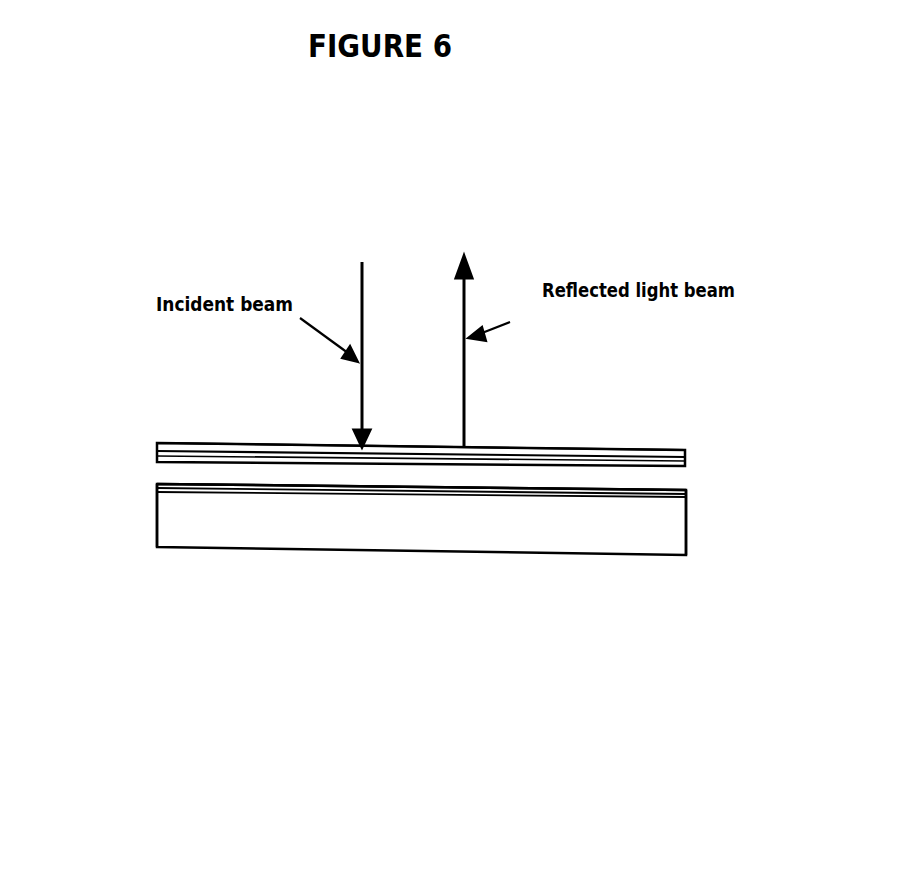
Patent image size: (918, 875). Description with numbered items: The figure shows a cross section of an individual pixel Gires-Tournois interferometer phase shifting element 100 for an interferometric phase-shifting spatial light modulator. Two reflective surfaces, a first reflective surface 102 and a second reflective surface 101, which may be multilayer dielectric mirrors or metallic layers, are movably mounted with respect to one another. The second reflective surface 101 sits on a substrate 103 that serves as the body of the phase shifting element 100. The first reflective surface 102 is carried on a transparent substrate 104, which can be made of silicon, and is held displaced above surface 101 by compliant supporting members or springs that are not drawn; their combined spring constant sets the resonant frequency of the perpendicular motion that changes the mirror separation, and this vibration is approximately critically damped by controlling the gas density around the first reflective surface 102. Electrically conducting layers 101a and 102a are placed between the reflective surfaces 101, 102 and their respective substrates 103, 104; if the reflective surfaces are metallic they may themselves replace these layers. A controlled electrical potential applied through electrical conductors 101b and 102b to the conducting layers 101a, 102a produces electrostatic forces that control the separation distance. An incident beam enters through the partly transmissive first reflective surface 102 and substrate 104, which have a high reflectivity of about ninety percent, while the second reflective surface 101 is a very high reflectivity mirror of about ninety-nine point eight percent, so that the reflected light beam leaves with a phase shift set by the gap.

The phase shifting element 100 is at (325, 535).
The second reflective surface 101 is at (685, 486).
The electrically conducting layer 101a is at (160, 487).
The electrical conductor 101b is at (158, 490).
The first reflective surface 102 is at (700, 476).
The electrically conducting layer 102a is at (160, 460).
The electrical conductor 102b is at (160, 452).
The substrate 103 is at (672, 528).
The substrate 104 is at (200, 445).